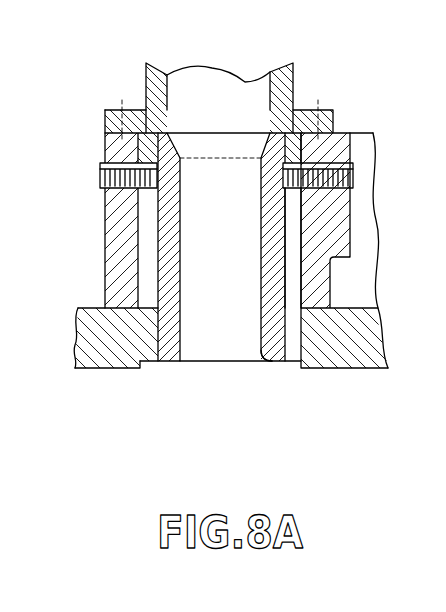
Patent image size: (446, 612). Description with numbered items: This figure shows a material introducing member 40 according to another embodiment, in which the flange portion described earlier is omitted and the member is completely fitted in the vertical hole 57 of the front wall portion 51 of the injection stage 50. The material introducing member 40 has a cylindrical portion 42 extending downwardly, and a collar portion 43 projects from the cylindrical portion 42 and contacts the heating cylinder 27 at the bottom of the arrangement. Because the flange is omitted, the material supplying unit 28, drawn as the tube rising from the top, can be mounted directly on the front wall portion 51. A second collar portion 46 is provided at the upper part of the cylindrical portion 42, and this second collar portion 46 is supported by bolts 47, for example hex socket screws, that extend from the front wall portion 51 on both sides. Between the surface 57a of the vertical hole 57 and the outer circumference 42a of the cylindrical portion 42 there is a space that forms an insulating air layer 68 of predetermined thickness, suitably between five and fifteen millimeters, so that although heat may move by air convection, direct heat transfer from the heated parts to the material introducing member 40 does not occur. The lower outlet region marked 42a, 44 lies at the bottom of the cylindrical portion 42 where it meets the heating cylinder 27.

The material supplying unit 28 is at (148, 90).
The second collar portion 46 is at (165, 123).
The bolts 47 is at (100, 175).
The injection stage 50 is at (223, 220).
The front wall portion 51 is at (118, 258).
The collar portion 43 is at (150, 343).
The cylindrical portion 42 is at (262, 252).
The outer circumference 42a is at (284, 381).
The outlet opening 44 is at (290, 345).
The vertical hole 57 is at (223, 220).
The surface 57a is at (300, 232).
The heating cylinder 27 is at (104, 352).
The insulating air layer 68 is at (290, 216).
The material introducing member 40 is at (207, 374).